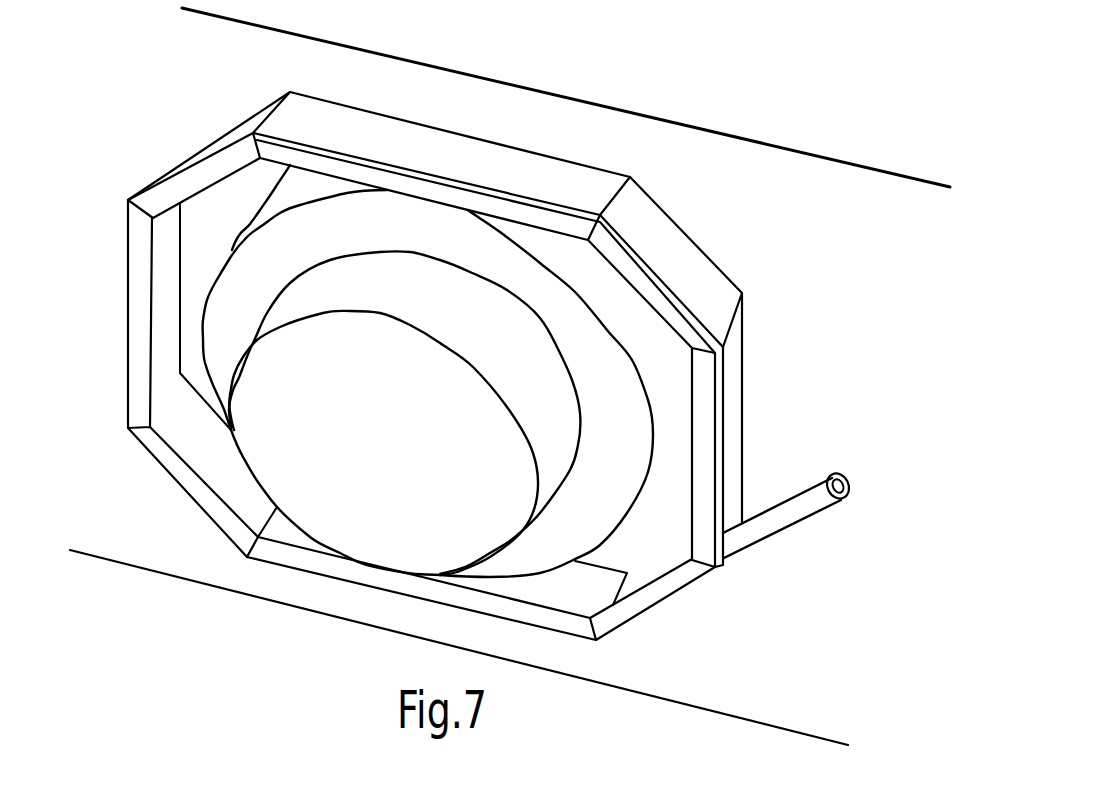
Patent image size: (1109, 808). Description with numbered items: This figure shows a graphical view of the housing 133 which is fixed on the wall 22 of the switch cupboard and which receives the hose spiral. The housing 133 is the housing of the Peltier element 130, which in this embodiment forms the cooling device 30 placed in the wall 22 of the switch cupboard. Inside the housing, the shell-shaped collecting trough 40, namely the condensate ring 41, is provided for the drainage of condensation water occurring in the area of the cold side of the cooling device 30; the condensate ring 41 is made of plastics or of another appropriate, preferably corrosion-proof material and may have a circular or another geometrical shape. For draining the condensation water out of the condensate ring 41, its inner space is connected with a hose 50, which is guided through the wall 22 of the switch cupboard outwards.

The wall 22 is at (713, 683).
The housing of the Peltier element 133 is at (603, 185).
The cooling device 30 is at (536, 386).
The Peltier element 130 is at (742, 408).
The collecting trough 40 is at (521, 371).
The condensate ring 41 is at (630, 313).
The hose 50 is at (812, 510).